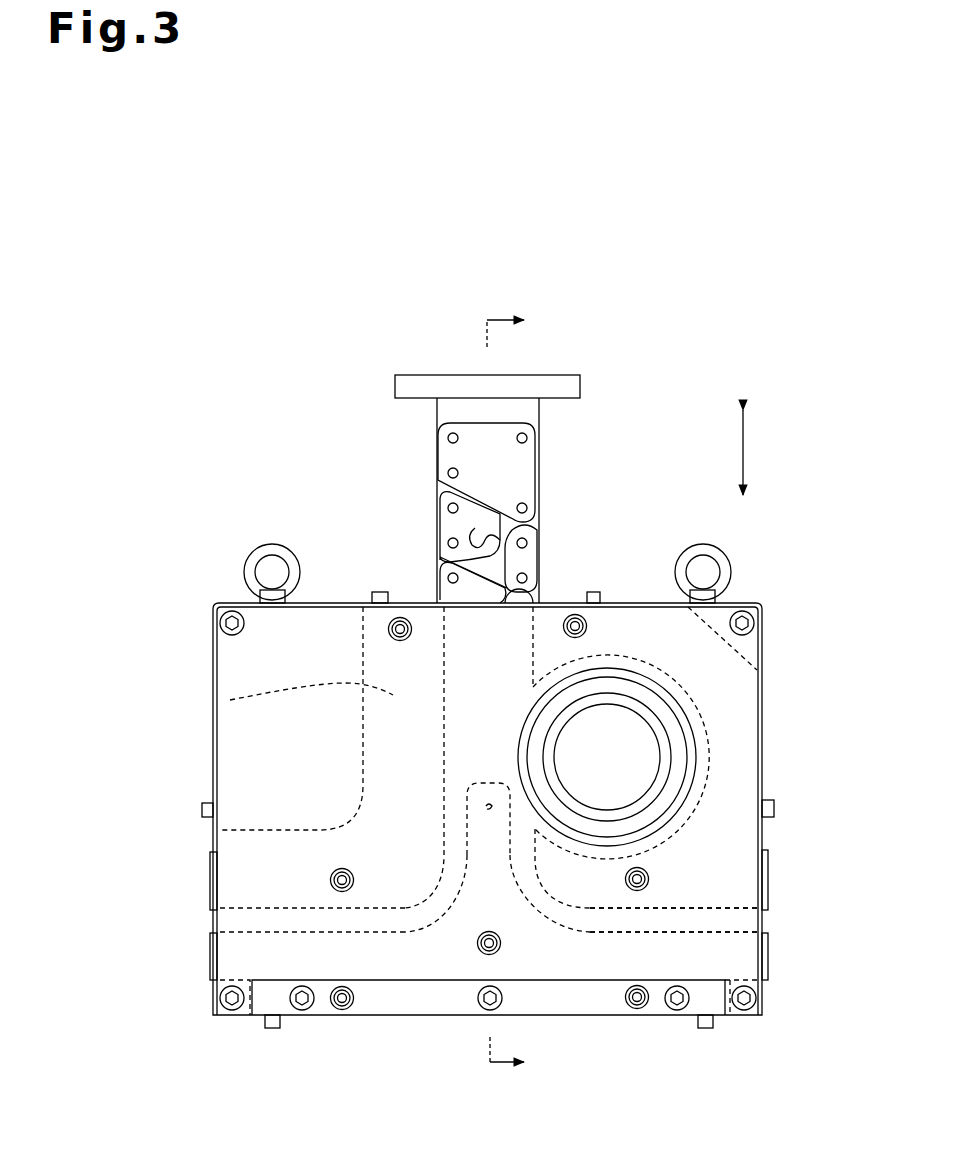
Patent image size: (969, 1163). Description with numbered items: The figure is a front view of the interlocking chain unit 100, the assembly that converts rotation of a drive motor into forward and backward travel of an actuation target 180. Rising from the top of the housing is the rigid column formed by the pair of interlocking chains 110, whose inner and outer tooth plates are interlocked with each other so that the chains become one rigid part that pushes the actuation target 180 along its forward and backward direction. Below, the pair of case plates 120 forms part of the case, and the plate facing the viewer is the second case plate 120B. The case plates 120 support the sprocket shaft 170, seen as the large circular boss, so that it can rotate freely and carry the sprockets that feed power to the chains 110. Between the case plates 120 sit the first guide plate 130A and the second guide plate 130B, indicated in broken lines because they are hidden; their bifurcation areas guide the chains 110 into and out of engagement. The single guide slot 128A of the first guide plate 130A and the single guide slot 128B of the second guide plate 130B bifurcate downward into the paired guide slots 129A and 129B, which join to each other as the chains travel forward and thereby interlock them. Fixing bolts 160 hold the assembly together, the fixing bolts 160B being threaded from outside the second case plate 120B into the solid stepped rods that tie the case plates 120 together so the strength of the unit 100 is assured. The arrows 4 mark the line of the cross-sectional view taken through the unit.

The interlocking chain unit 100 is at (279, 243).
The section line of FIG. 4 is at (516, 693).
The actuation target 180 is at (420, 384).
The interlocking chains 110 is at (551, 496).
The case plates 120 is at (447, 809).
The second case plate 120B is at (252, 770).
The guide slot of first guide plate 128A is at (368, 733).
The guide slot of second guide plate 128B is at (291, 718).
The first guide plate 130A is at (230, 702).
The second guide plate 130B is at (818, 920).
The guide slots of first guide plate 129A is at (632, 932).
The guide slots of second guide plate 129B is at (528, 941).
The sprocket shaft 170 is at (638, 753).
The fixing bolts 160 is at (563, 633).
The fixing bolt 160B is at (627, 888).